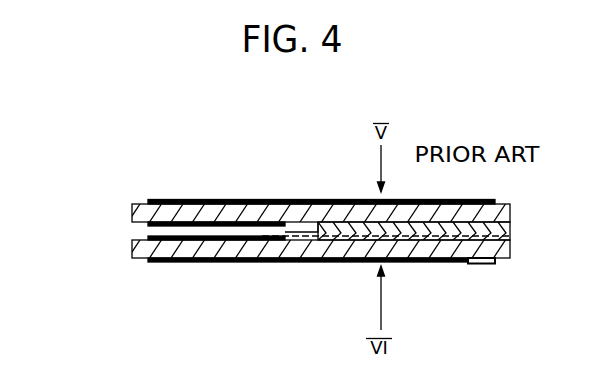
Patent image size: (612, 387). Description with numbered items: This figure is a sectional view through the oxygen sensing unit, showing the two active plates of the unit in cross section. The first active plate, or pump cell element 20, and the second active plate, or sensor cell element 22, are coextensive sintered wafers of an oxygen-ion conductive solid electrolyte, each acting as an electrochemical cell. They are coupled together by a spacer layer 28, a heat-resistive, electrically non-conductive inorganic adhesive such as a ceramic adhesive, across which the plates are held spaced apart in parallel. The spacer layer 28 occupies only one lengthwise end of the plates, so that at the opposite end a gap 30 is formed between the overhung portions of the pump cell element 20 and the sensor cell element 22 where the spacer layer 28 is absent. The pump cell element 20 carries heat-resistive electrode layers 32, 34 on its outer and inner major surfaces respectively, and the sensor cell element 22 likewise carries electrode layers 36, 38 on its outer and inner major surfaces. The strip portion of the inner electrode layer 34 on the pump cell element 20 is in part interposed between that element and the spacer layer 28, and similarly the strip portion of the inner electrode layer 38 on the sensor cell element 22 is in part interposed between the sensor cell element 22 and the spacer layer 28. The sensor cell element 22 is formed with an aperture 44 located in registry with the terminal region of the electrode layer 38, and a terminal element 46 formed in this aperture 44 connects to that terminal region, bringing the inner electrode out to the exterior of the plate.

The first active plate (pump cell element) 20 is at (132, 211).
The second active plate (sensor cell element) 22 is at (131, 248).
The gap 30 is at (155, 231).
The electrode layer 32 is at (333, 200).
The electrode layer 34 is at (229, 222).
The electrode layer 36 is at (251, 263).
The electrode layer 38 is at (310, 237).
The spacer layer 28 is at (413, 240).
The aperture 44 is at (477, 256).
The terminal element 46 is at (495, 264).